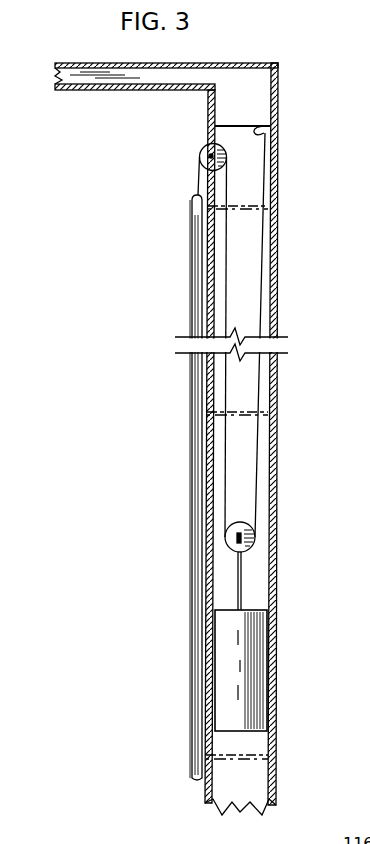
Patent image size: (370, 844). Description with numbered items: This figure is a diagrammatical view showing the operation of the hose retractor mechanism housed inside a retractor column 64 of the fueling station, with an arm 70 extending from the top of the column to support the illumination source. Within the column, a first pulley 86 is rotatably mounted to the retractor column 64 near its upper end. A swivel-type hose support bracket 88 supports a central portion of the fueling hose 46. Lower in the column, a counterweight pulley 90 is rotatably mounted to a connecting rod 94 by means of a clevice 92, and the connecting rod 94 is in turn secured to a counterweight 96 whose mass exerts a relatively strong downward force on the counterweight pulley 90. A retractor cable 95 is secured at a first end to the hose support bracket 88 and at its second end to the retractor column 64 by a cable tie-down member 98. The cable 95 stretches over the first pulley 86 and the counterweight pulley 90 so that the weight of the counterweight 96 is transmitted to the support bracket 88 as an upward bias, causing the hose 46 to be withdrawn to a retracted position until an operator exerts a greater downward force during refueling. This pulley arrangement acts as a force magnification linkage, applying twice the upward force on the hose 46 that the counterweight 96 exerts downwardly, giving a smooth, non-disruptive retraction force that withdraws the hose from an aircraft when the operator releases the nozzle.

The fueling hose 46 is at (192, 418).
The retractor column 64 is at (277, 745).
The arm 70 is at (110, 92).
The first pulley 86 is at (199, 152).
The hose support bracket 88 is at (190, 205).
The counterweight pulley 90 is at (232, 527).
The clevice 92 is at (236, 540).
The connecting rod 94 is at (242, 578).
The retractor cable 95 is at (262, 268).
The counterweight 96 is at (232, 660).
The cable tie-down member 98 is at (270, 124).